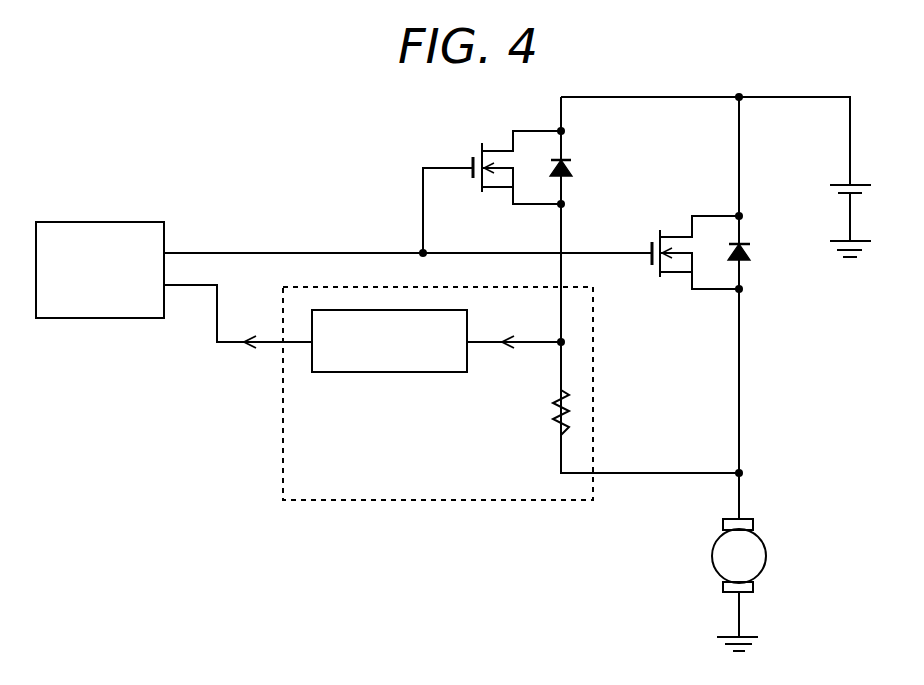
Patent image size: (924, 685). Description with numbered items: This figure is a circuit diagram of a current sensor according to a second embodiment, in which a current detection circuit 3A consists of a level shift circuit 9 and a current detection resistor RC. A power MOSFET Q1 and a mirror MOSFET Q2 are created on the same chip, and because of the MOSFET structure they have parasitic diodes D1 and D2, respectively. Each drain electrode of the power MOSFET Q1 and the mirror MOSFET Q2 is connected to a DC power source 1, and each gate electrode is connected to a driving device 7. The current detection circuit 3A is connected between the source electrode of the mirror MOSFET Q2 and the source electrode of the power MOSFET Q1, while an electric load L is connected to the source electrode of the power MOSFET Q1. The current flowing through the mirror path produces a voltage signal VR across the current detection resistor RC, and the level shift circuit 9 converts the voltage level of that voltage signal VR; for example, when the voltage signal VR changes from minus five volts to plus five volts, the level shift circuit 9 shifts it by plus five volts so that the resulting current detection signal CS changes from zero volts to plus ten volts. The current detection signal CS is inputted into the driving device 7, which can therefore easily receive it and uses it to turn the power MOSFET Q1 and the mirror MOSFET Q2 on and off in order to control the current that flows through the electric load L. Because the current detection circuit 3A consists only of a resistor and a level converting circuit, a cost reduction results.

The driving device 7 is at (122, 222).
The level shift circuit 9 is at (418, 372).
The current detection circuit 3A is at (525, 501).
The DC power source 1 is at (867, 181).
The power MOSFET Q1 is at (675, 273).
The mirror MOSFET Q2 is at (492, 148).
The parasitic diode D1 is at (752, 250).
The parasitic diode D2 is at (573, 163).
The current detection resistor RC is at (569, 420).
The electric load L is at (767, 553).
The current detection signal CS is at (250, 350).
The voltage signal VR is at (510, 348).